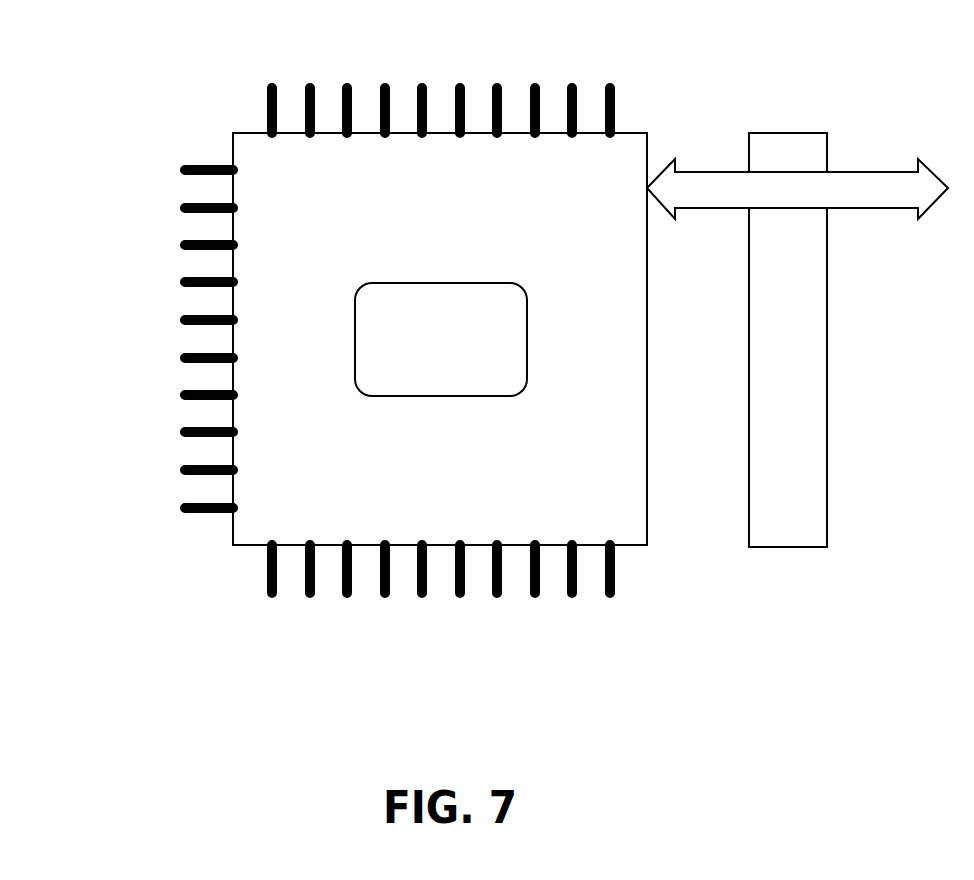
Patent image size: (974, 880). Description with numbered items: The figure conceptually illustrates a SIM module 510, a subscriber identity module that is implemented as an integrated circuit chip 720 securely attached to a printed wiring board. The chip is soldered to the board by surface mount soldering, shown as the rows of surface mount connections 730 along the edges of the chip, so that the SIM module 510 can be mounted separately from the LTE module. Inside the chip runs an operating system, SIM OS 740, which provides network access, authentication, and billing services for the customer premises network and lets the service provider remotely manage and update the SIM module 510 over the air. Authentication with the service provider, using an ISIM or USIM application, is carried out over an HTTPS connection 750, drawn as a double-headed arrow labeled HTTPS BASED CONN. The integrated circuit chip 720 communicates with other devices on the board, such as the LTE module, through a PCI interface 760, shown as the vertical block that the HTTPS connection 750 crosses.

The SIM module 510 is at (126, 69).
The integrated circuit chip 720 is at (233, 133).
The surface mount connections 730 is at (251, 574).
The SIM OS 740 is at (355, 310).
The HTTPS connection 750 is at (862, 172).
The PCI interface 760 is at (786, 133).